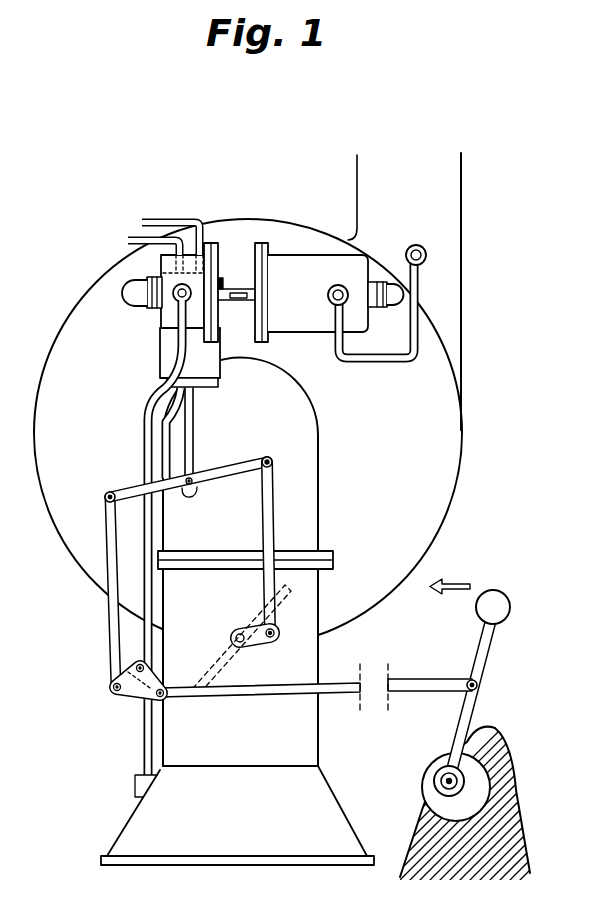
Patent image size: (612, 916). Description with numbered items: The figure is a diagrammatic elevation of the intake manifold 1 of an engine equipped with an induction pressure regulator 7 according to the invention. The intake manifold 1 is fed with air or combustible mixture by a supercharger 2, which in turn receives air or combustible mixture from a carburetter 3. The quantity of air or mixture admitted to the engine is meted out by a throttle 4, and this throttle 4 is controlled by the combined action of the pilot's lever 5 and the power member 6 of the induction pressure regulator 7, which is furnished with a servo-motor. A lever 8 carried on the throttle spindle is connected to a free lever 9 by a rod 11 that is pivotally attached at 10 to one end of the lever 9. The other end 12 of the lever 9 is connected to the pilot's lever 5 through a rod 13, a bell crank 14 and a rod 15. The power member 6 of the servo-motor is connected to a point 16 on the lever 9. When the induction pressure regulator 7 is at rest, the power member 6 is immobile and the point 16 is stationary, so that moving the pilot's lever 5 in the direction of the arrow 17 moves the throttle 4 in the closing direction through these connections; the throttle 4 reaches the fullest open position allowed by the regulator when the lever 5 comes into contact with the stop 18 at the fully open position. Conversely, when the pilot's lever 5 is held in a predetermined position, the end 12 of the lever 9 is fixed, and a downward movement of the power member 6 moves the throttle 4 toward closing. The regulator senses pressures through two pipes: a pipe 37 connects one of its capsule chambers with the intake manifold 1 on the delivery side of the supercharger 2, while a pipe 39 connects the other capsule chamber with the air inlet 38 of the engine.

The intake manifold 1 is at (443, 222).
The supercharger 2 is at (37, 411).
The carburetter 3 is at (308, 666).
The throttle 4 is at (211, 673).
The pilot's lever 5 is at (483, 657).
The power member 6 is at (188, 438).
The induction pressure regulator 7 is at (168, 347).
The lever 8 is at (260, 640).
The free lever 9 is at (220, 473).
The pivot 10 is at (272, 461).
The rod 11 is at (269, 517).
The end of lever 12 is at (104, 497).
The rod 13 is at (115, 605).
The bell crank 14 is at (142, 690).
The rod 15 is at (417, 688).
The point on lever 16 is at (195, 485).
The arrow 17 is at (454, 575).
The stop 18 is at (481, 728).
The pipe 37 is at (381, 359).
The air inlet 38 is at (130, 833).
The pipe 39 is at (143, 746).